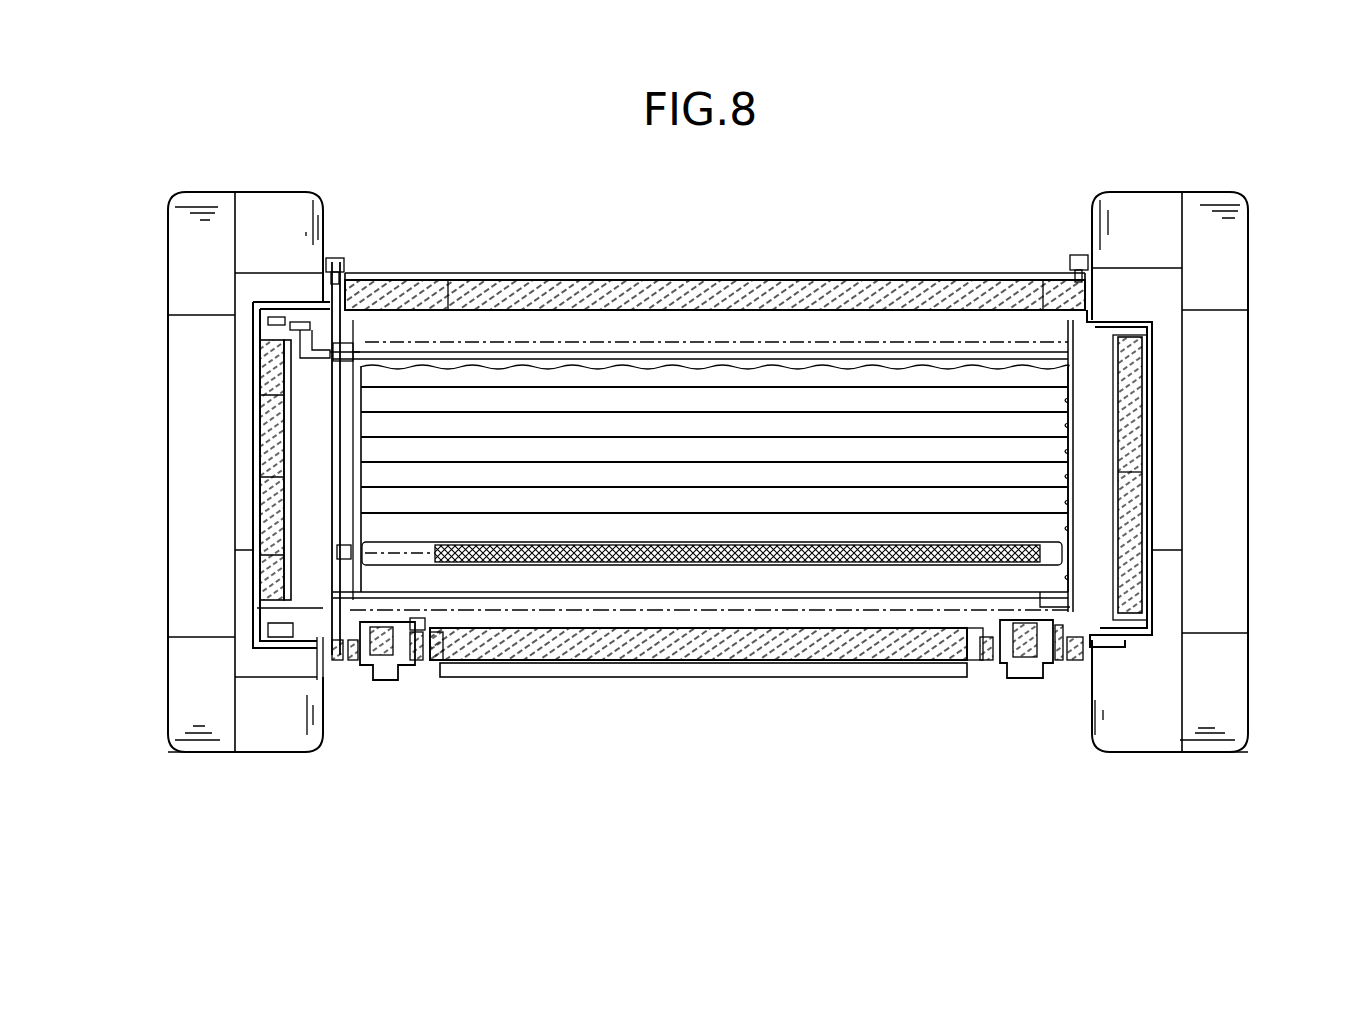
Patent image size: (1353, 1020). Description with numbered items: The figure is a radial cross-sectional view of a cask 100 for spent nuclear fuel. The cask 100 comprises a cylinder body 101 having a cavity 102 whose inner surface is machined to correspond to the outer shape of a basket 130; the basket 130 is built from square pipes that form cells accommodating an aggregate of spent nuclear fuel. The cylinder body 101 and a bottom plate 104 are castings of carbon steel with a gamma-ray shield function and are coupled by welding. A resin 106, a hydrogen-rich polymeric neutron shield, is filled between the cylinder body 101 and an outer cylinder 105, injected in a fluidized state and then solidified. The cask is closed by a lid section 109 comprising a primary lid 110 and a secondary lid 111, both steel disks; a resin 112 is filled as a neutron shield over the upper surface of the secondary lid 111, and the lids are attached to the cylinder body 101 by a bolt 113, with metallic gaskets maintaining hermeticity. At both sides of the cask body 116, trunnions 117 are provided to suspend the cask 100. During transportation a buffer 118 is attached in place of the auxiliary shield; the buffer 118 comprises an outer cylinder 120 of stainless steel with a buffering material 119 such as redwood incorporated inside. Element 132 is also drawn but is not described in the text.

The cask 100 is at (309, 181).
The cylinder body 101 is at (623, 320).
The cavity 102 is at (752, 590).
The bottom plate 104 is at (1105, 378).
The outer cylinder 105 is at (790, 272).
The resin 106 is at (916, 290).
The lid section 109 is at (172, 470).
The primary lid 110 is at (305, 425).
The secondary lid 111 is at (255, 445).
The resin 112 is at (262, 360).
The bolt 113 is at (300, 338).
The cask body 116 is at (689, 707).
The trunnion 117 is at (380, 682).
The buffer 118 is at (156, 245).
The buffering material 119 is at (313, 752).
The outer cylinder 120 is at (200, 753).
The basket 130 is at (882, 530).
The fin stack 132 is at (578, 508).